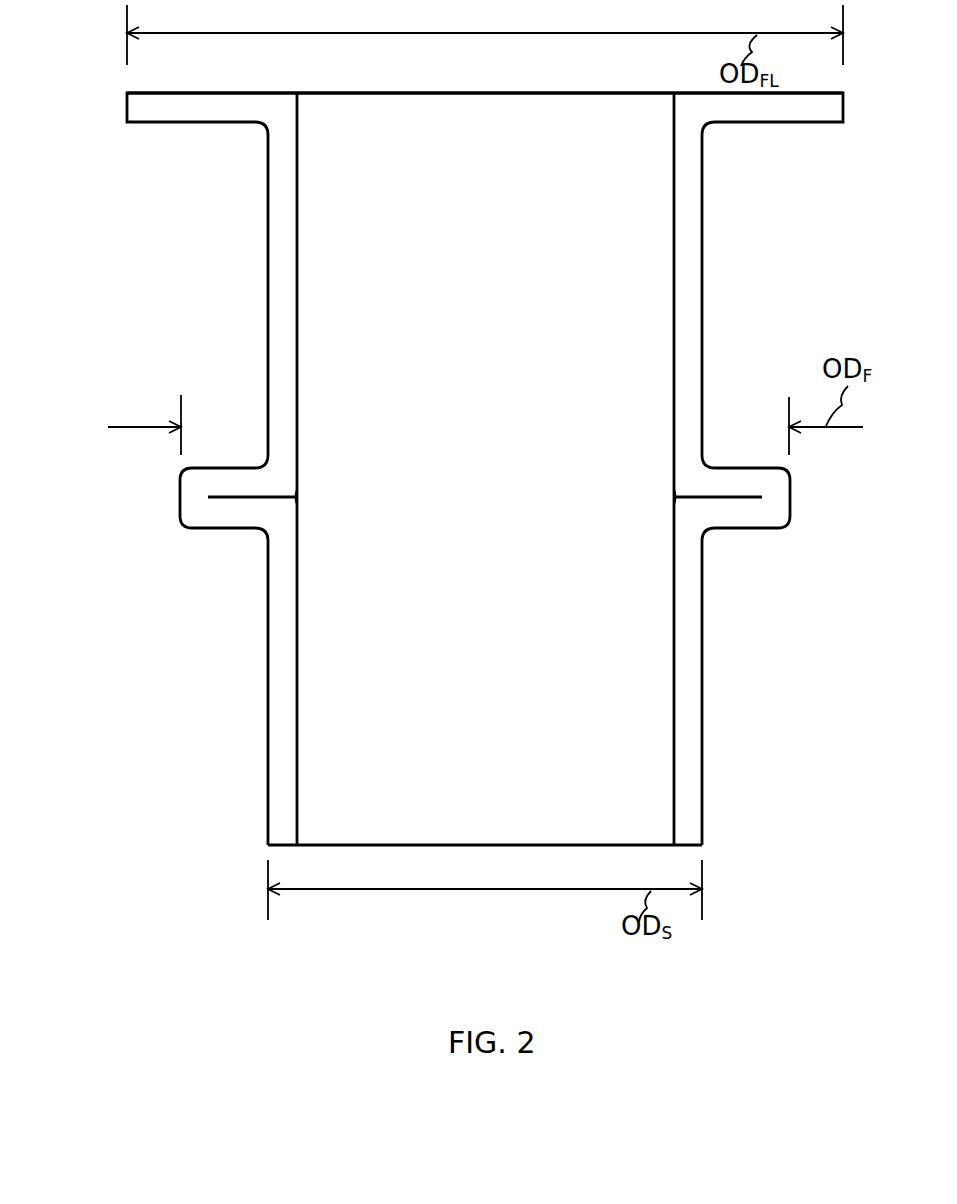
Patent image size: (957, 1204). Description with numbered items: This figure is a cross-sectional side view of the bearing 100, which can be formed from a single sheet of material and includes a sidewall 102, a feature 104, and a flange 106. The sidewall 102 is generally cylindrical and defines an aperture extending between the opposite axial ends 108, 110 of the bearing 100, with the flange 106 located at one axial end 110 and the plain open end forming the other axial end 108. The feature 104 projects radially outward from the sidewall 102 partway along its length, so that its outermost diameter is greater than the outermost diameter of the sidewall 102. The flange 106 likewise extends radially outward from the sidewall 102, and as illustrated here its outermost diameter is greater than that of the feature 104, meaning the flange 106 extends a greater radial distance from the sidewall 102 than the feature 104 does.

The bearing 100 is at (435, 460).
The sidewall 102 is at (268, 702).
The feature 104 is at (236, 530).
The flange 106 is at (775, 125).
The axial end 108 is at (544, 856).
The axial end 110 is at (245, 84).